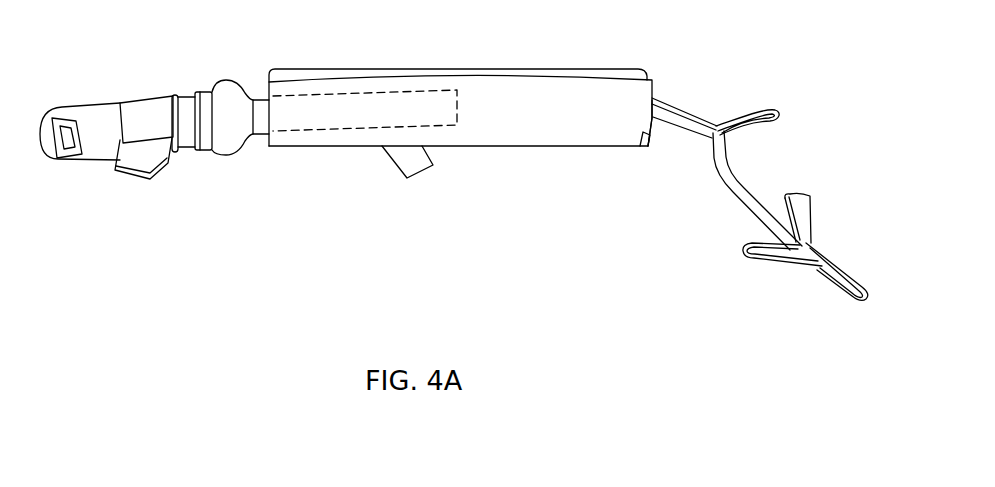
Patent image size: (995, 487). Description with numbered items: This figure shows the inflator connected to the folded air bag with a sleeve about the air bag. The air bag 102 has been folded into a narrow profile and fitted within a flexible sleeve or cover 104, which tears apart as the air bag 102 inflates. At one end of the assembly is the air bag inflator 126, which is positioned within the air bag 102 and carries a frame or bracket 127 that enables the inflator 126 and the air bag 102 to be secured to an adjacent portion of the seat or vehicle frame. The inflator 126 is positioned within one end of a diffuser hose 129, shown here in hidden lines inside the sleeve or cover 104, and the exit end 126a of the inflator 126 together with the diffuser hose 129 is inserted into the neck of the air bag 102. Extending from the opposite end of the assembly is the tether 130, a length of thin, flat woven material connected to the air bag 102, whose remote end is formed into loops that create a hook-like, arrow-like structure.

The air bag 102 is at (641, 148).
The flexible sleeve or cover 104 is at (592, 82).
The air bag inflator 126 is at (93, 105).
The exit end of the inflator 126a is at (262, 140).
The frame or bracket 127 is at (133, 178).
The diffuser hose 129 is at (345, 91).
The tether 130 is at (694, 134).